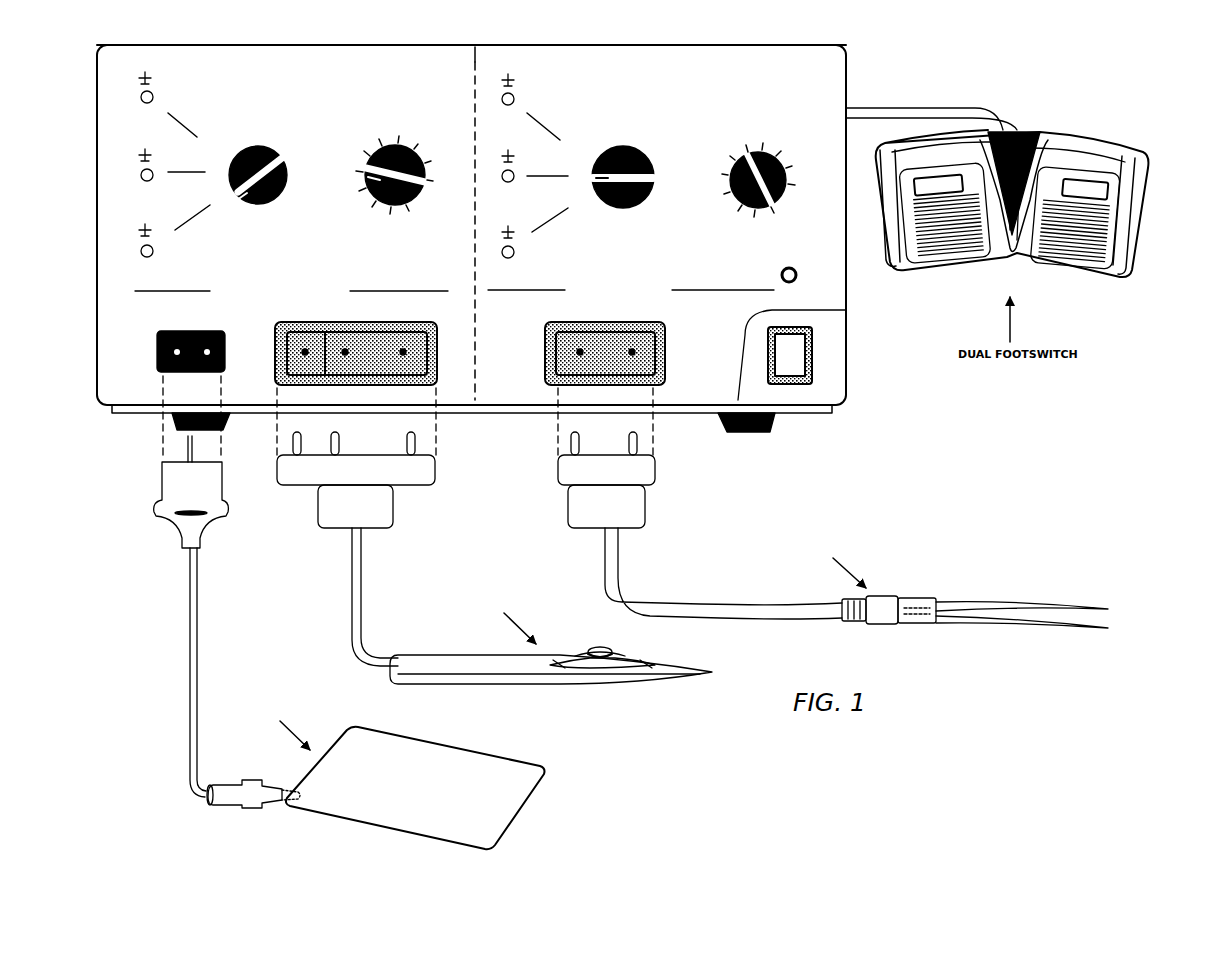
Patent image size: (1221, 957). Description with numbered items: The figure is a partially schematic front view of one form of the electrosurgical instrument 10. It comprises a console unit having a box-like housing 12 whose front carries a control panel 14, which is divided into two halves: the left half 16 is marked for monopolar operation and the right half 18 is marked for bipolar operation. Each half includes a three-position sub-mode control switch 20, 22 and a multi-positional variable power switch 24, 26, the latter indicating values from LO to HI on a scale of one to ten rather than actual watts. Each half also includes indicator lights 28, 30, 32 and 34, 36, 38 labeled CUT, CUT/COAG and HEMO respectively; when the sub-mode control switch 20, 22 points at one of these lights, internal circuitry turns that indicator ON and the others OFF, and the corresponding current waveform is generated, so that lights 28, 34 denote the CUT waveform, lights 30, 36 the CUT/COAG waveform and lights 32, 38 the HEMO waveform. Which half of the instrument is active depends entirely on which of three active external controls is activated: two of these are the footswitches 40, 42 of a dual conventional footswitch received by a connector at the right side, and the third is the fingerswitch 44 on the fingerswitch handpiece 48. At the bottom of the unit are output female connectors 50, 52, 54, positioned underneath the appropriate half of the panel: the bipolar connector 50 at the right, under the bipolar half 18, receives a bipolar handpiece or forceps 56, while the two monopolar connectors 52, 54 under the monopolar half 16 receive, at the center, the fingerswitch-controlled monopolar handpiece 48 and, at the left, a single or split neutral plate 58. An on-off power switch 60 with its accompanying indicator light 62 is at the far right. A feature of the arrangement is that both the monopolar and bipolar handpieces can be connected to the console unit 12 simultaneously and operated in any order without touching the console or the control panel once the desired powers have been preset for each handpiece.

The electrosurgical instrument 10 is at (866, 67).
The housing 12 is at (846, 292).
The control panel 14 is at (441, 45).
The monopolar half 16 is at (318, 96).
The bipolar half 18 is at (684, 80).
The sub-mode control switch 20 is at (258, 210).
The sub-mode control switch 22 is at (628, 209).
The variable power switch 24 is at (420, 202).
The variable power switch 26 is at (785, 195).
The indicator light 28 is at (153, 94).
The indicator light 30 is at (153, 172).
The indicator light 32 is at (153, 250).
The indicator light 34 is at (515, 95).
The indicator light 36 is at (515, 172).
The indicator light 38 is at (515, 252).
The footswitch 40 is at (945, 260).
The footswitch 42 is at (1077, 266).
The fingerswitch 44 is at (595, 646).
The fingerswitch handpiece 48 is at (565, 681).
The output female connector 50 is at (667, 346).
The output female connector 52 is at (383, 320).
The output female connector 54 is at (205, 329).
The bipolar handpiece 56 is at (873, 621).
The neutral plate 58 is at (338, 737).
The on-off power switch 60 is at (812, 372).
The indicator light 62 is at (797, 275).